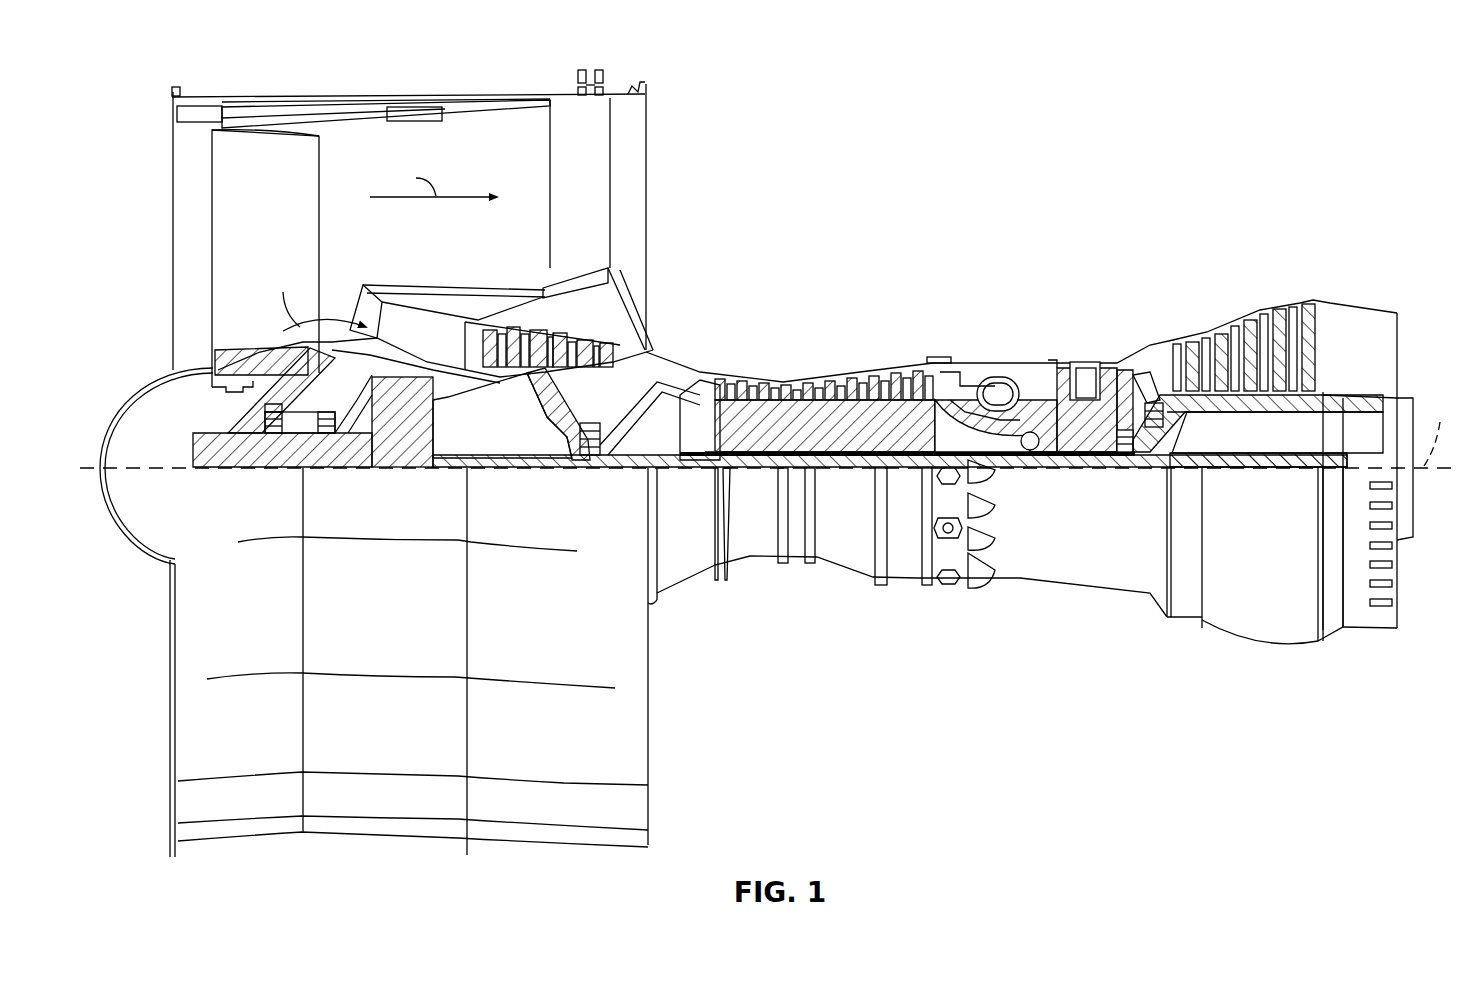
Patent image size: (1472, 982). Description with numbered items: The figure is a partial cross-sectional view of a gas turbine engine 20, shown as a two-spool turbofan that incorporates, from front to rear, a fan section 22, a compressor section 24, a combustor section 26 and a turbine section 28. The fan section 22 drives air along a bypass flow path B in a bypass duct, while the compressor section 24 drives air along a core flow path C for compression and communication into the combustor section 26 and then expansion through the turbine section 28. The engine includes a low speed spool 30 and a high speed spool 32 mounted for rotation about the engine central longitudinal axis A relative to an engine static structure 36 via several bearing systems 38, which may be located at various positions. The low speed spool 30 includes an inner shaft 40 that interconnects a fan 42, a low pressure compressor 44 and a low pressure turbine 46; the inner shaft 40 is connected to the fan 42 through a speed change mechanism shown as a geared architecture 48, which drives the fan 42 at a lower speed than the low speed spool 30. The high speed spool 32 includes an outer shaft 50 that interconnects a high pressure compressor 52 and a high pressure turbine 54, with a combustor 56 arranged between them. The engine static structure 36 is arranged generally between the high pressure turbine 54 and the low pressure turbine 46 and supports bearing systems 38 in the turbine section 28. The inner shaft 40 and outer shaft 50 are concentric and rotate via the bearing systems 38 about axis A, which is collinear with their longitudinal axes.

The gas turbine engine 20 is at (770, 438).
The fan section 22 is at (273, 90).
The compressor section 24 is at (920, 351).
The combustor section 26 is at (1026, 372).
The turbine section 28 is at (1265, 430).
The low speed spool 30 is at (870, 470).
The high speed spool 32 is at (920, 410).
The engine static structure 36 is at (905, 590).
The bearing systems 38 is at (276, 432).
The inner shaft 40 is at (660, 460).
The fan 42 is at (256, 221).
The low pressure compressor 44 is at (563, 342).
The low pressure turbine 46 is at (1248, 330).
The geared architecture 48 is at (402, 440).
The outer shaft 50 is at (1033, 450).
The high pressure compressor 52 is at (828, 437).
The high pressure turbine 54 is at (1086, 364).
The combustor 56 is at (1013, 383).